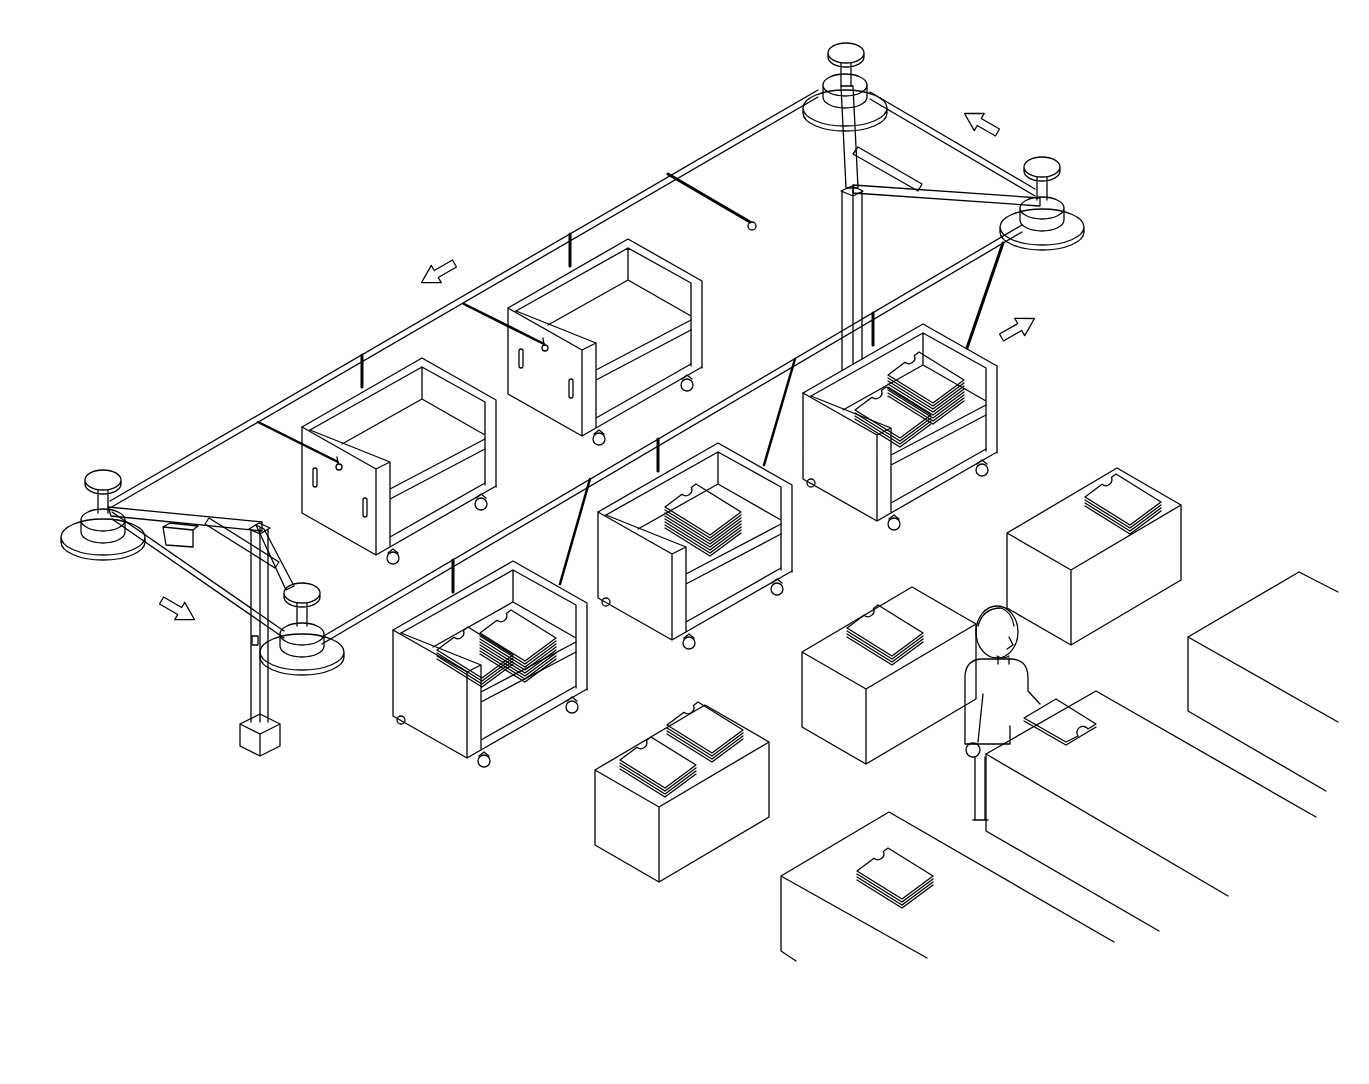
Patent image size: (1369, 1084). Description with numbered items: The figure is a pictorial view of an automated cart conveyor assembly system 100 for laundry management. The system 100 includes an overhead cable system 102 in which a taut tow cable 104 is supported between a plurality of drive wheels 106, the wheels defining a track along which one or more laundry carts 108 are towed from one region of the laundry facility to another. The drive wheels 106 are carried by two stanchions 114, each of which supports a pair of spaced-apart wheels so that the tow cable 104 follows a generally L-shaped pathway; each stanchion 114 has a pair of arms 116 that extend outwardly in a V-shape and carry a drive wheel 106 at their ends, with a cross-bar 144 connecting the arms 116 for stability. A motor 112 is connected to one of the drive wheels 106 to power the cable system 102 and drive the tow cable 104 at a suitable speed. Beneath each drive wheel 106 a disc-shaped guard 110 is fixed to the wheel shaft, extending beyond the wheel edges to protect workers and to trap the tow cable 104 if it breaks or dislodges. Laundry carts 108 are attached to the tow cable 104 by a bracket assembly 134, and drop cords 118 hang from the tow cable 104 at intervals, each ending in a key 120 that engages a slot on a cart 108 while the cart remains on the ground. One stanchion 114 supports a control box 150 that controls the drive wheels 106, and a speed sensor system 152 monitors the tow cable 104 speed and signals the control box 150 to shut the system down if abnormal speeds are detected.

The automated cart conveyor assembly system 100 is at (290, 312).
The overhead cable system 102 is at (131, 463).
The tow cable 104 is at (189, 452).
The drive wheel 106 is at (1060, 194).
The laundry cart 108 is at (990, 400).
The guard 110 is at (810, 122).
The motor 112 is at (178, 526).
The stanchion 114 is at (841, 291).
The arm 116 is at (963, 188).
The drop cord 118 is at (742, 200).
The key 120 is at (757, 224).
The bracket assembly 134 is at (573, 242).
The cross-bar 144 is at (246, 548).
The control box 150 is at (250, 641).
The speed sensor system 152 is at (829, 55).